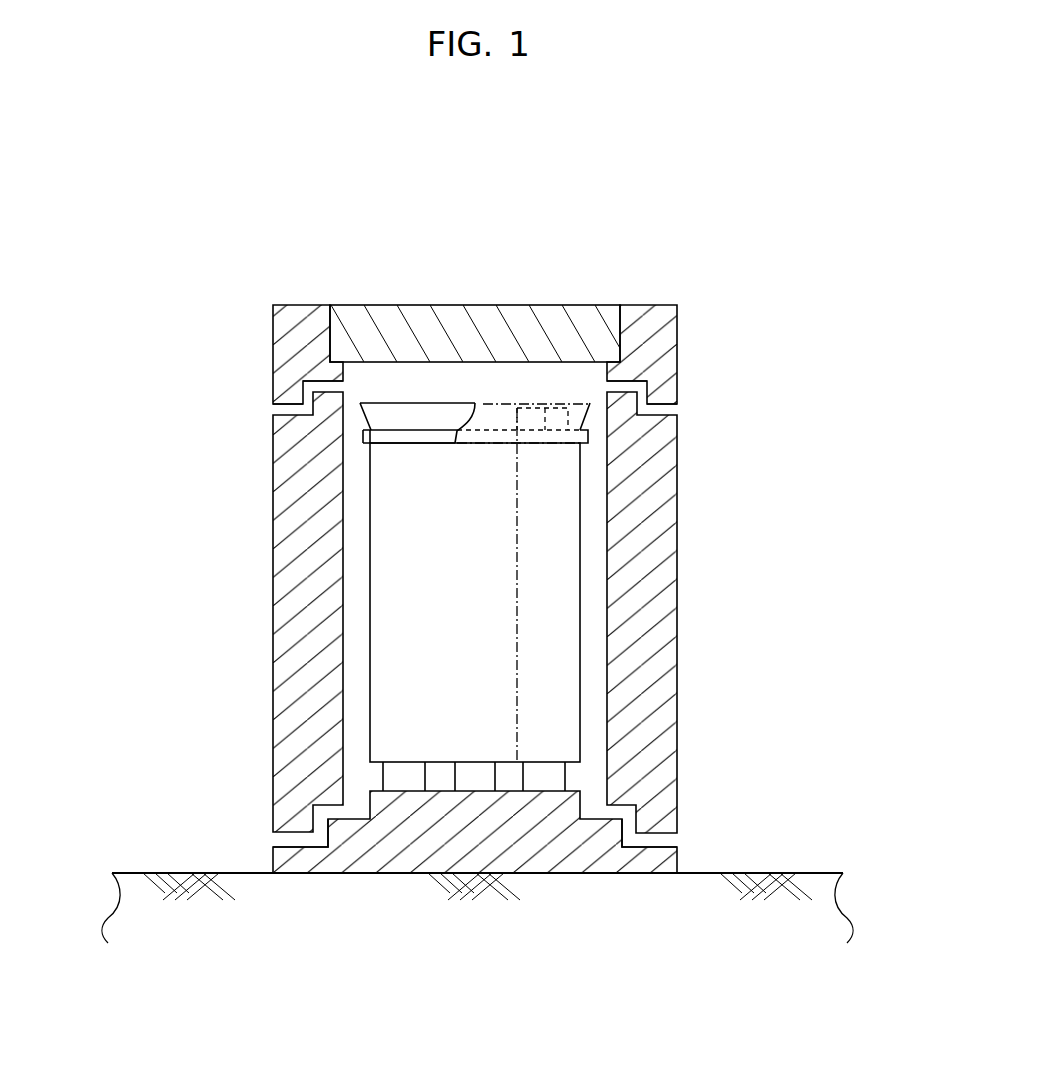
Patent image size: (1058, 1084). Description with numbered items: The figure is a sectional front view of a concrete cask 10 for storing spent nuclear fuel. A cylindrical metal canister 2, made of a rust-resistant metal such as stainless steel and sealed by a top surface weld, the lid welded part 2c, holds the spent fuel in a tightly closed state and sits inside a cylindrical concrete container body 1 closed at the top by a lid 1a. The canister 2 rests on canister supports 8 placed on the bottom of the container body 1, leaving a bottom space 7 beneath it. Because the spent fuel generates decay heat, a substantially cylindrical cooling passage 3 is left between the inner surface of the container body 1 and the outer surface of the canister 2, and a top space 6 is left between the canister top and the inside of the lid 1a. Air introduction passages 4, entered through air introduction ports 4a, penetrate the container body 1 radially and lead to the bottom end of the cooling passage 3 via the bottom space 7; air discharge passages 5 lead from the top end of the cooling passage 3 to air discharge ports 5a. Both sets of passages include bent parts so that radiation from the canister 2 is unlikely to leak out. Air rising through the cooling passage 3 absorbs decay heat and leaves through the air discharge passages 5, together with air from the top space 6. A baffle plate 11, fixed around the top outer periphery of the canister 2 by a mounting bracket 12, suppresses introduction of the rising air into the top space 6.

The concrete cask 10 is at (617, 222).
The container body 1 is at (273, 690).
The lid 1a is at (462, 305).
The canister 2 is at (584, 530).
The lid welded part 2c is at (565, 420).
The cooling passage 3 is at (593, 589).
The air introduction passage 4 is at (320, 836).
The air introduction port 4a is at (270, 840).
The air discharge passage 5 is at (311, 394).
The air discharge port 5a is at (677, 412).
The top space 6 is at (498, 381).
The bottom space 7 is at (510, 776).
The canister support 8 is at (403, 778).
The baffle plate 11 is at (393, 417).
The mounting bracket 12 is at (365, 435).